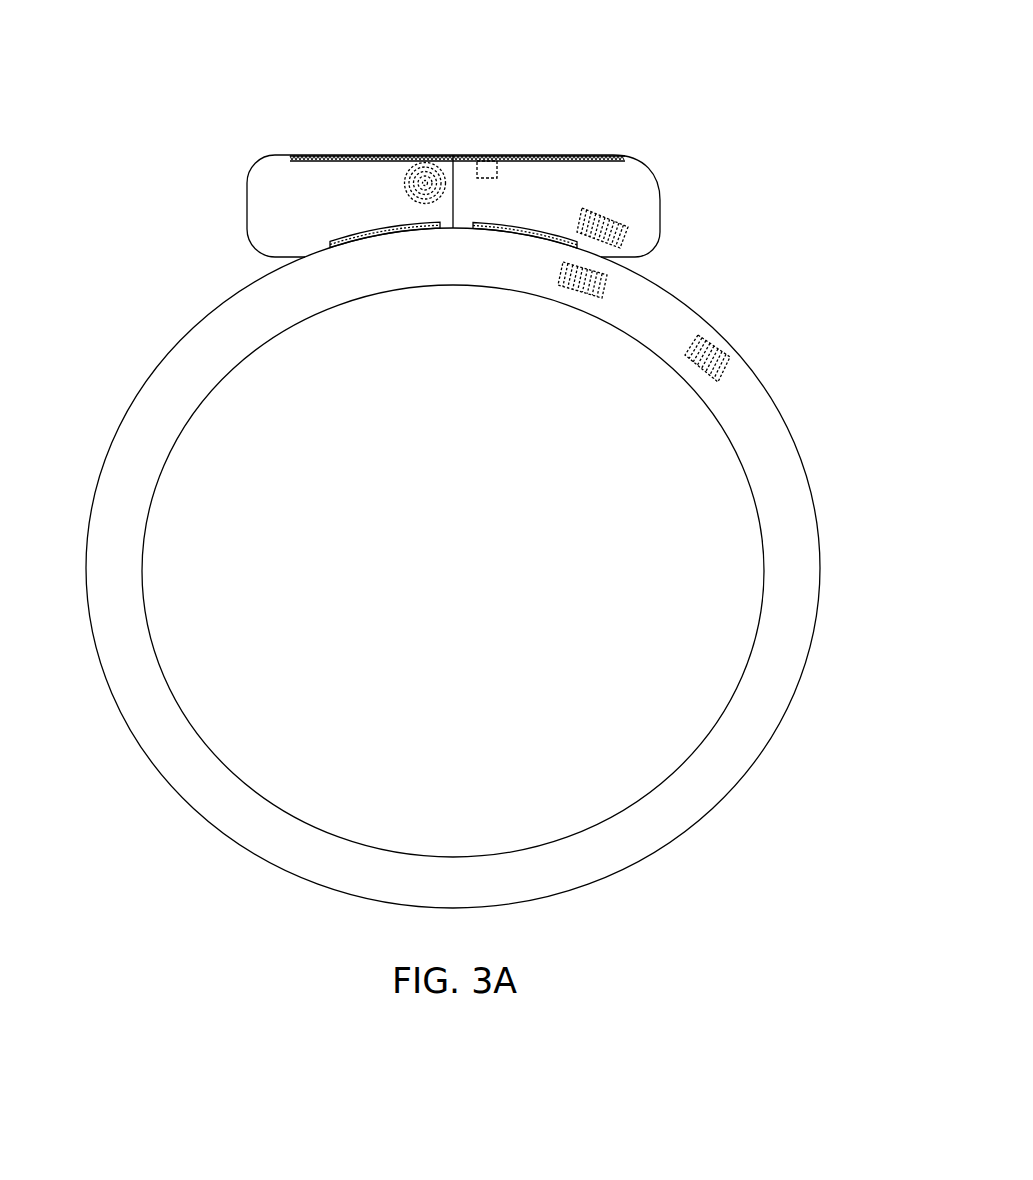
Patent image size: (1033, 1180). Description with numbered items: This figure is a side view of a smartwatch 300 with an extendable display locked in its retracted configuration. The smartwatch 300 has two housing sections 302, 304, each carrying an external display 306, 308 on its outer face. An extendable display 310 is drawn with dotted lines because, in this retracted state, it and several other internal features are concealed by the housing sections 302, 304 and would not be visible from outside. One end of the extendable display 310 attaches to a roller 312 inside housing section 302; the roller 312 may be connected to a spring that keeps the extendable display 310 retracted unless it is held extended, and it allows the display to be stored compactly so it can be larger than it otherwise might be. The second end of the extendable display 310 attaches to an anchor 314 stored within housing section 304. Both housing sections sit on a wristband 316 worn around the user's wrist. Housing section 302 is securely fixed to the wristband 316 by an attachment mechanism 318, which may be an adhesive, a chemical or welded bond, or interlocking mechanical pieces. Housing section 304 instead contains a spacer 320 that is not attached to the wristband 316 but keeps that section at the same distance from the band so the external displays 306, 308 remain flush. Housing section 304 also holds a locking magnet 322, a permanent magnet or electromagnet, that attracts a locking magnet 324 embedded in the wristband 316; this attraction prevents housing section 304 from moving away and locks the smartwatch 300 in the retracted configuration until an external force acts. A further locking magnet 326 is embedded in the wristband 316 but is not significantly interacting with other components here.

The smartwatch 300 is at (176, 85).
The housing section 302 is at (268, 180).
The housing section 304 is at (635, 182).
The external display 306 is at (340, 157).
The external display 308 is at (570, 156).
The extendable display 310 is at (463, 158).
The roller 312 is at (407, 187).
The anchor 314 is at (485, 167).
The wristband 316 is at (195, 387).
The attachment mechanism 318 is at (382, 242).
The spacer 320 is at (502, 238).
The locking magnet 322 is at (621, 227).
The locking magnet 324 is at (583, 284).
The locking magnet 326 is at (708, 370).